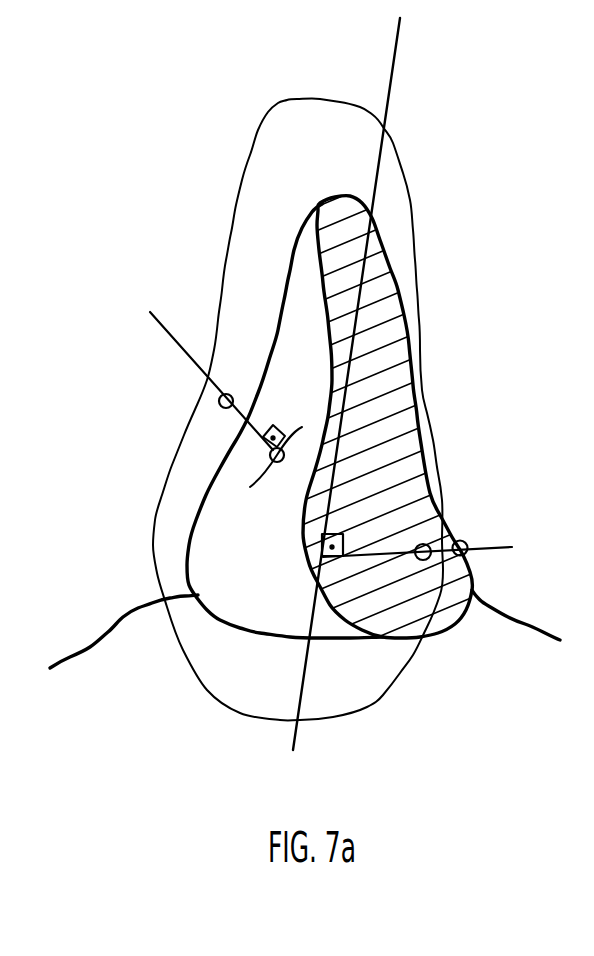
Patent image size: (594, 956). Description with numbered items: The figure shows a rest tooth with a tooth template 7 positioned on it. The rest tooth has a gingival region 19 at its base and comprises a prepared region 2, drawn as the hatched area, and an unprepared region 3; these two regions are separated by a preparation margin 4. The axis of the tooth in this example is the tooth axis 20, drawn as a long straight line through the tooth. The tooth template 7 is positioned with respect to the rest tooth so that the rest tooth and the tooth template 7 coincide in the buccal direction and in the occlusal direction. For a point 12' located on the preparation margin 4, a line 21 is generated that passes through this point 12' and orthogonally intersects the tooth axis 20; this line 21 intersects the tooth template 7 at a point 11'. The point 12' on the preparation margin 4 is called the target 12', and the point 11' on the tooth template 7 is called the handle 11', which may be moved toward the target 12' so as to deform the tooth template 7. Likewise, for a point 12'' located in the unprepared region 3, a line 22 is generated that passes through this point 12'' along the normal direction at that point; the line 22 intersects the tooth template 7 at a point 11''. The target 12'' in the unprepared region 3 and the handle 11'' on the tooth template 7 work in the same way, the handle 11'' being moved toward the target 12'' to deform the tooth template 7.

The prepared region 2 is at (390, 337).
The unprepared region 3 is at (200, 548).
The preparation margin 4 is at (420, 443).
The tooth template 7 is at (399, 155).
The handle 11' is at (450, 519).
The handle 11'' is at (186, 399).
The target 12' is at (487, 527).
The target 12'' is at (211, 455).
The gingival region 19 is at (470, 632).
The tooth axis 20 is at (401, 60).
The line 21 is at (501, 550).
The line 22 is at (176, 340).